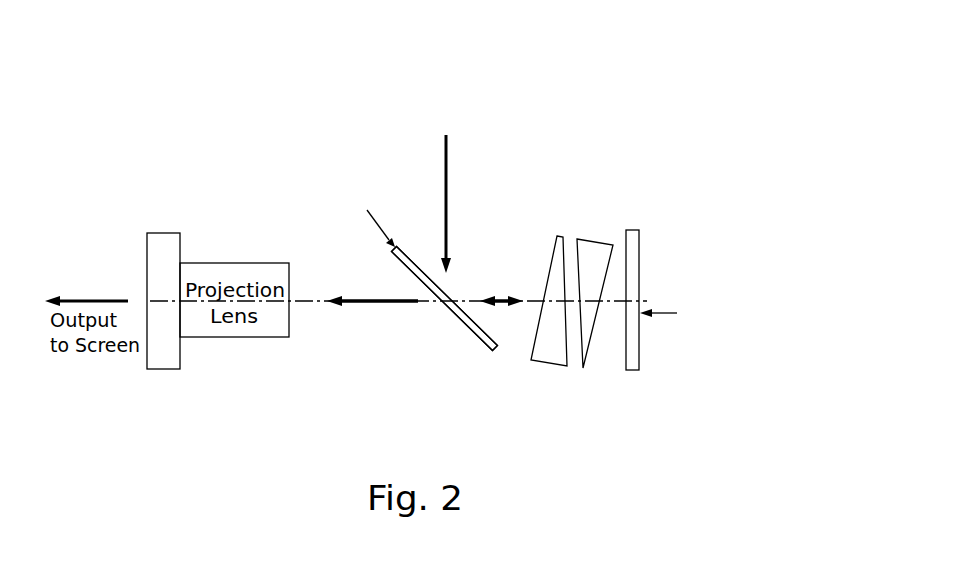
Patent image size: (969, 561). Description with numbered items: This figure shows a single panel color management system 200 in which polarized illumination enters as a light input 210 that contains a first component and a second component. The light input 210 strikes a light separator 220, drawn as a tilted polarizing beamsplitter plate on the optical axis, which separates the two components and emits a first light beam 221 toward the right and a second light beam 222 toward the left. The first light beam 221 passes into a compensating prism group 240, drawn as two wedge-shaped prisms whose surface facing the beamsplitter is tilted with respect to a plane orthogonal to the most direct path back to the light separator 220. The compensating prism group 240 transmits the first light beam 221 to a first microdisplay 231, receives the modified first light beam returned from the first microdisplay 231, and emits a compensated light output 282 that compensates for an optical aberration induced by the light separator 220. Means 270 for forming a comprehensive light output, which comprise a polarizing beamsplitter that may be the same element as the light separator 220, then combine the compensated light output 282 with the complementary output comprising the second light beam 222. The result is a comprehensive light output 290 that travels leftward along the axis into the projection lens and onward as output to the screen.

The color management system 200 is at (700, 82).
The light input 210 is at (410, 82).
The light separator 220 is at (453, 312).
The first light beam 221 is at (523, 293).
The second light beam 222 is at (377, 311).
The first microdisplay 231 is at (745, 325).
The compensating prism group 240 is at (570, 231).
The means for forming a comprehensive light output 270 is at (483, 350).
The compensated light output 282 is at (487, 304).
The comprehensive light output 290 is at (367, 297).